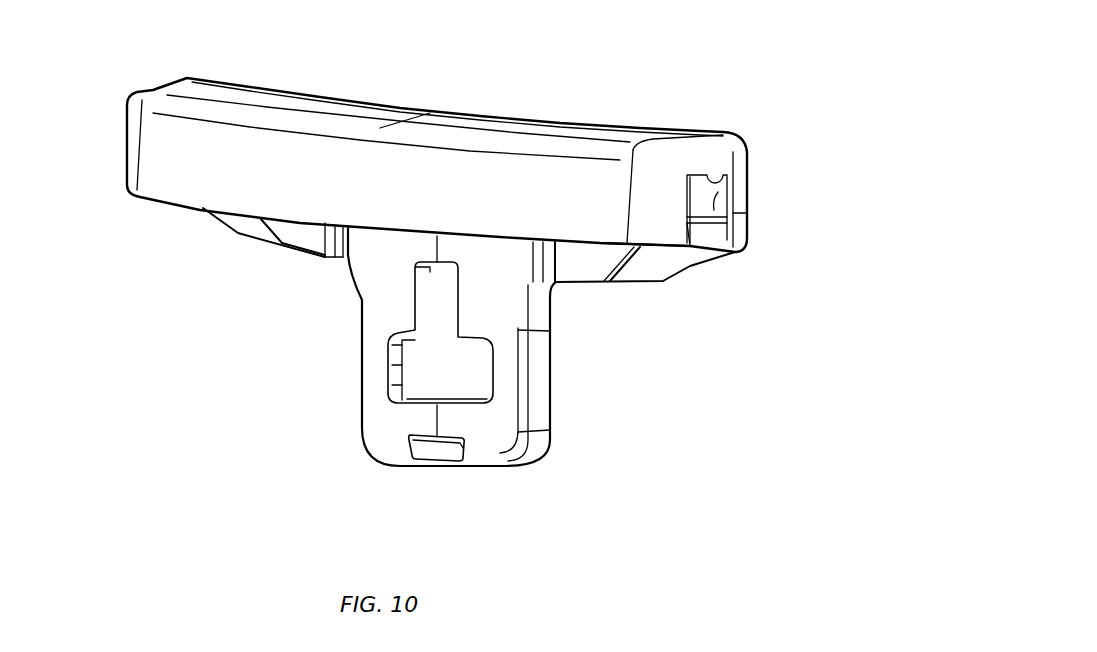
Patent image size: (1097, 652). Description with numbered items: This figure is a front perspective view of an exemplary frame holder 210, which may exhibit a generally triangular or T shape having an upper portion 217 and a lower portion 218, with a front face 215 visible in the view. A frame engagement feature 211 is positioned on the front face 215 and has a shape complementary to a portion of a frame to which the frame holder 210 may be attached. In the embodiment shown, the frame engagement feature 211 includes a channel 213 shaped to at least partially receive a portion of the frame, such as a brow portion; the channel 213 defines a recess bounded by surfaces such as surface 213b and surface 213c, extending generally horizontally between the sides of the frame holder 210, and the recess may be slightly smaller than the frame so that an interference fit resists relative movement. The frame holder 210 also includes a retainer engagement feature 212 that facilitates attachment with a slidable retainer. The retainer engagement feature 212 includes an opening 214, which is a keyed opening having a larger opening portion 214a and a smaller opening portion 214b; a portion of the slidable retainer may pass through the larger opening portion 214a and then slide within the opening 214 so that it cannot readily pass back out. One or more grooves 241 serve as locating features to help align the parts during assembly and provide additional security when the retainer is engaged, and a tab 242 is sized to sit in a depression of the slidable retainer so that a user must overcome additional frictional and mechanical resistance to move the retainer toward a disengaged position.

The frame holder 210 is at (739, 32).
The frame engagement feature 211 is at (732, 193).
The retainer engagement feature 212 is at (480, 424).
The channel 213 is at (687, 172).
The surface 213b is at (737, 149).
The surface 213c is at (690, 224).
The opening 214 is at (440, 377).
The larger opening portion 214a is at (390, 362).
The smaller opening portion 214b is at (427, 282).
The front face 215 is at (510, 283).
The upper portion 217 is at (160, 148).
The lower portion 218 is at (503, 407).
The groove 241 is at (546, 265).
The tab 242 is at (430, 452).